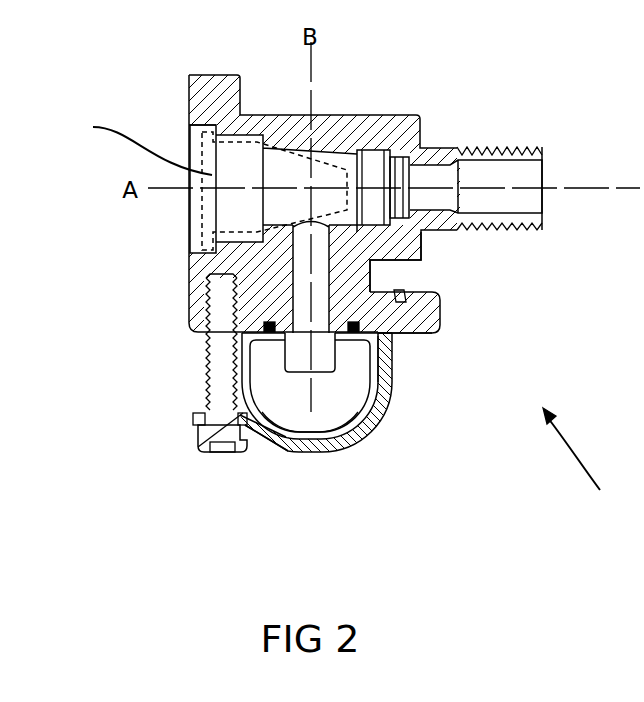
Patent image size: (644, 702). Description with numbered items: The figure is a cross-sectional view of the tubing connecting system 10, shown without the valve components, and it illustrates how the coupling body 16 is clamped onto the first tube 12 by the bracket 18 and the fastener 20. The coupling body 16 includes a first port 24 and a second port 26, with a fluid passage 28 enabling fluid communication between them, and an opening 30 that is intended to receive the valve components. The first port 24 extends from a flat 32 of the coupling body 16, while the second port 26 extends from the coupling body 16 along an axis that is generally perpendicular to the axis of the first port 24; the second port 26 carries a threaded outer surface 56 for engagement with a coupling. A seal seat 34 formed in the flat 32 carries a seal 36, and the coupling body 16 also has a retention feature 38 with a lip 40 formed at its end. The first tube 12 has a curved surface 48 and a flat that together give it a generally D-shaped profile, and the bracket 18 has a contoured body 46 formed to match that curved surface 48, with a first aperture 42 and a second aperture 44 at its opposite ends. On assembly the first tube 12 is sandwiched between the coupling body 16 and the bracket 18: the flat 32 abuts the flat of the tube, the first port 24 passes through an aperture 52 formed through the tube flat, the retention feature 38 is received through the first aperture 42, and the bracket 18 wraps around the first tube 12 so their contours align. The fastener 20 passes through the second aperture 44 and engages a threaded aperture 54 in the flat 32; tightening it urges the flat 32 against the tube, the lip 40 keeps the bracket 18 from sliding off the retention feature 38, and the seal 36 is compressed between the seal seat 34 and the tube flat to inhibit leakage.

The tubing connecting system 10 is at (589, 455).
The first tube 12 is at (243, 360).
The coupling body 16 is at (293, 120).
The bracket 18 is at (285, 447).
The fastener 20 is at (198, 448).
The first port 24 is at (318, 362).
The second port 26 is at (530, 180).
The fluid passage 28 is at (330, 160).
The opening 30 is at (196, 160).
The flat 32 is at (383, 342).
The seal seat 34 is at (398, 295).
The seal 36 is at (266, 323).
The retention feature 38 is at (424, 336).
The lip 40 is at (432, 293).
The first aperture 42 is at (392, 343).
The second aperture 44 is at (208, 415).
The contoured body 46 is at (330, 440).
The curved surface 48 is at (322, 432).
The aperture 52 is at (335, 268).
The threaded aperture 54 is at (222, 278).
The threaded outer surface 56 is at (505, 148).